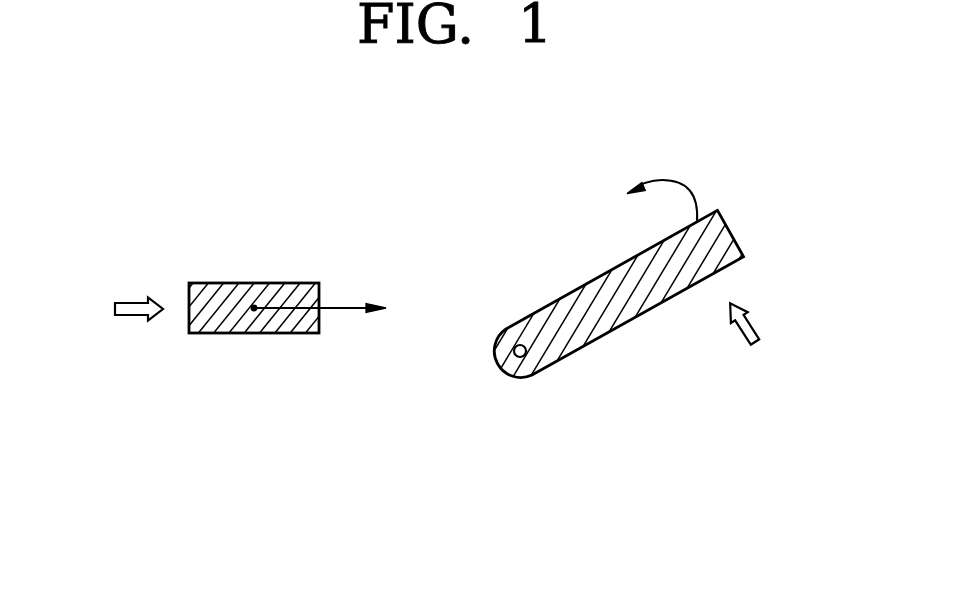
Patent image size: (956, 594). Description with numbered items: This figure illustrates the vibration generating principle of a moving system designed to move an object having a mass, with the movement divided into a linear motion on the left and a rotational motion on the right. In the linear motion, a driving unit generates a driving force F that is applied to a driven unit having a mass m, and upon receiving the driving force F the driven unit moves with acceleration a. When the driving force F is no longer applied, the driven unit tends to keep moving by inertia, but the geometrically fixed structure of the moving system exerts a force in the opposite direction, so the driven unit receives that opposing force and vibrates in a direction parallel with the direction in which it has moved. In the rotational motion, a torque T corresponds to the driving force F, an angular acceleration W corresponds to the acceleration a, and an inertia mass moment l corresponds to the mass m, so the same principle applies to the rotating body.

The mass of driven unit m is at (237, 293).
The driving force F is at (124, 310).
The acceleration of driven unit a is at (318, 294).
The inertia mass moment l is at (585, 317).
The angular acceleration W is at (670, 189).
The torque T is at (748, 340).